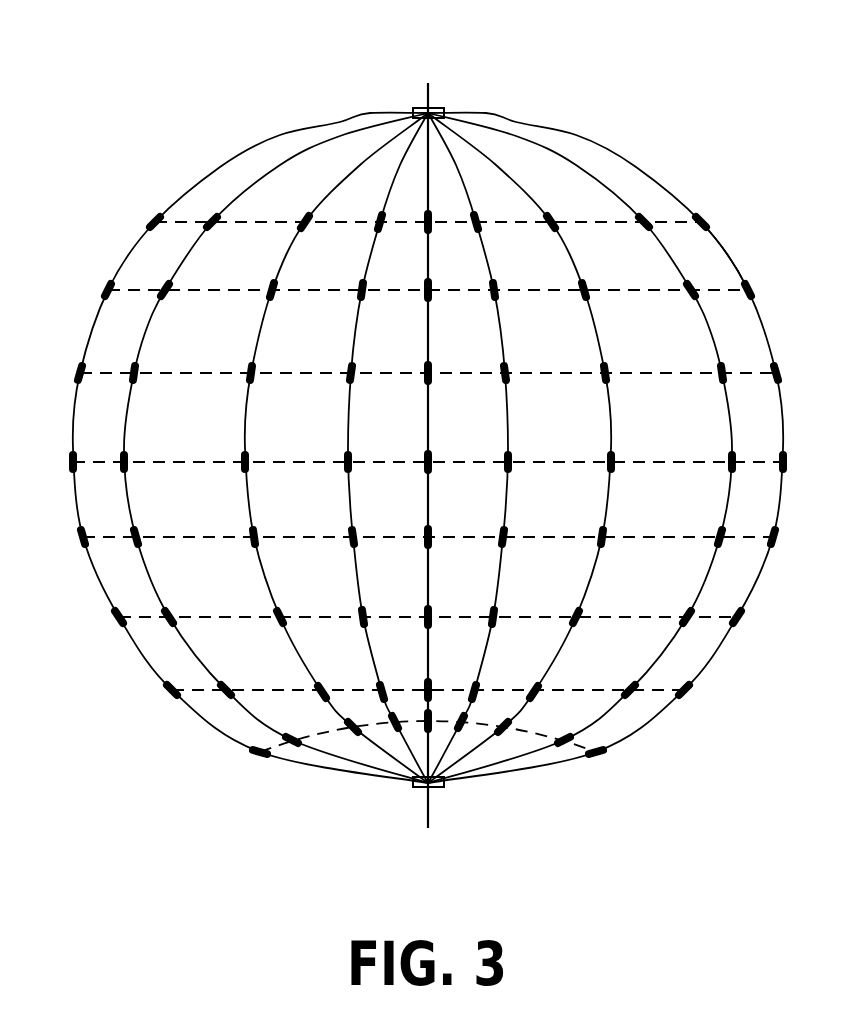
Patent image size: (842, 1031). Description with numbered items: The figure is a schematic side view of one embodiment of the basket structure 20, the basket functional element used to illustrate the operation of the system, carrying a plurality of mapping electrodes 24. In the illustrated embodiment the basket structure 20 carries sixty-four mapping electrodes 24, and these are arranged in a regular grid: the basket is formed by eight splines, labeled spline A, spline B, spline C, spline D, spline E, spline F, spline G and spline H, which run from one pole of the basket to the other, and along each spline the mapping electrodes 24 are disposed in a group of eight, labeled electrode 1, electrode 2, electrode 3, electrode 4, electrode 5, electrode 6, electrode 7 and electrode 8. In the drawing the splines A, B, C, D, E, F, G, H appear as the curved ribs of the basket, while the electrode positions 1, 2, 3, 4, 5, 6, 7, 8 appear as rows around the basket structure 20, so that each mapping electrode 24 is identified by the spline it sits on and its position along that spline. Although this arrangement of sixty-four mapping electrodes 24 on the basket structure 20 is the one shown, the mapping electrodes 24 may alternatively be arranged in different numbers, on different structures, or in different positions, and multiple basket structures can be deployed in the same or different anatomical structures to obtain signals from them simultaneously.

The basket structure 20 is at (137, 82).
The mapping electrodes 24 is at (751, 286).
The electrode 1 is at (152, 217).
The electrode 2 is at (107, 288).
The electrode 3 is at (78, 372).
The electrode 4 is at (72, 458).
The electrode 5 is at (84, 542).
The electrode 6 is at (116, 622).
The electrode 7 is at (168, 697).
The electrode 8 is at (255, 758).
The spline A is at (448, 131).
The spline B is at (490, 147).
The spline C is at (572, 164).
The spline D is at (673, 194).
The spline E is at (412, 108).
The spline F is at (367, 112).
The spline G is at (253, 178).
The spline H is at (318, 212).